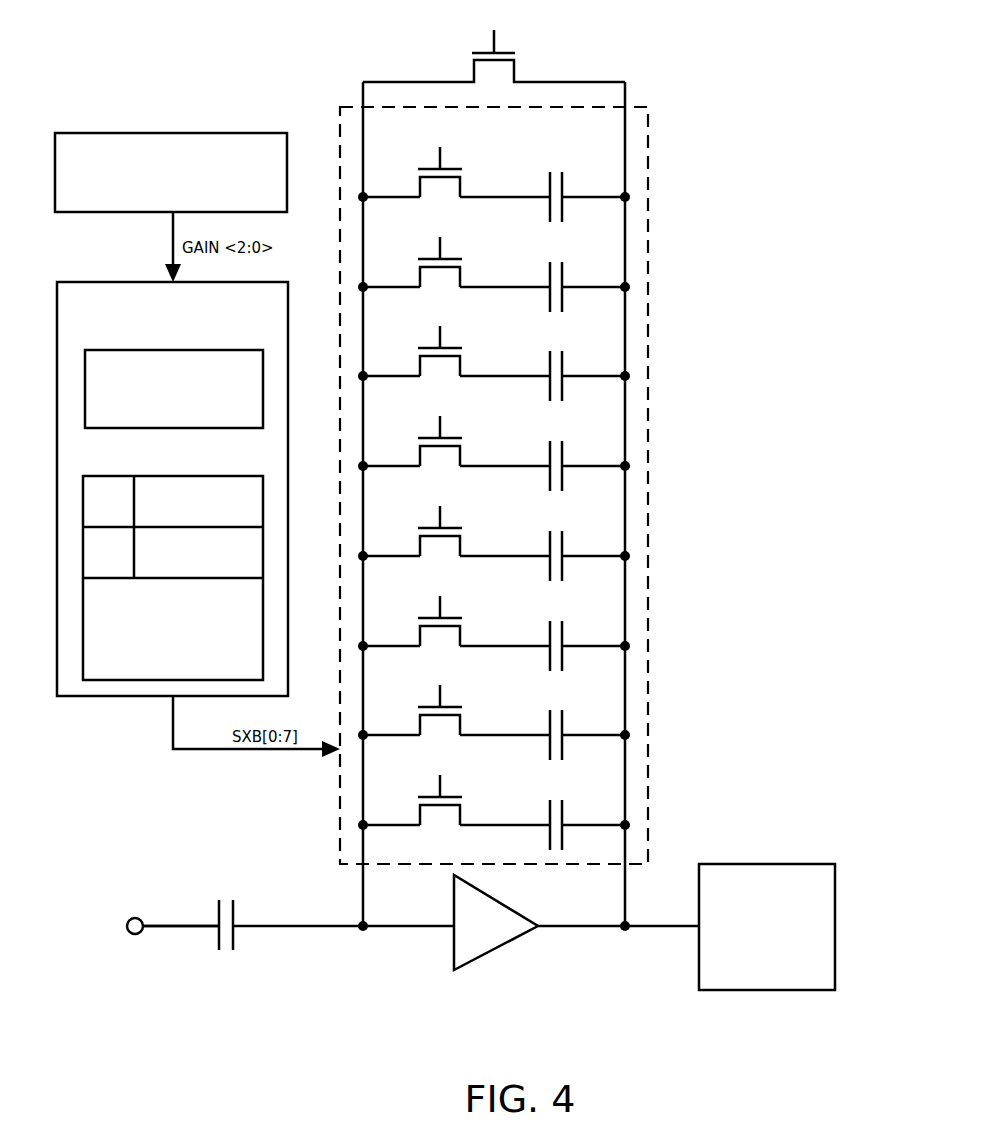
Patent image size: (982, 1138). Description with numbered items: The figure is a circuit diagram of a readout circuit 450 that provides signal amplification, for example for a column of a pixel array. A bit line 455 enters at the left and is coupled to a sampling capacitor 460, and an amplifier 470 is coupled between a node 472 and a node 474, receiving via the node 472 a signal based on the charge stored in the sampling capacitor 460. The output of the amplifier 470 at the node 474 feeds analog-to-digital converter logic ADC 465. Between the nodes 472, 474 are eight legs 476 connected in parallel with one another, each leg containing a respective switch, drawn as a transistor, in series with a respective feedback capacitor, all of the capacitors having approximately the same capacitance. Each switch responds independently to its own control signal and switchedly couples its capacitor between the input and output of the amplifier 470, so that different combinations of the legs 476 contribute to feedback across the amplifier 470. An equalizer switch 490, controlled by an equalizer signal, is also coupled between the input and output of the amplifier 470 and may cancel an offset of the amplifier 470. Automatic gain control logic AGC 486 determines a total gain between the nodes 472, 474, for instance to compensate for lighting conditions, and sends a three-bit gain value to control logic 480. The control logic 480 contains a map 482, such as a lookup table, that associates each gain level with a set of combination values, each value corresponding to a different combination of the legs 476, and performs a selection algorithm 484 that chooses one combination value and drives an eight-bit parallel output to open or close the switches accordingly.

The readout circuit 450 is at (183, 86).
The bit line 455 is at (171, 932).
The sampling capacitor 460 is at (232, 885).
The analog-to-digital converter logic ADC 465 is at (767, 927).
The amplifier 470 is at (500, 950).
The node 472 is at (361, 944).
The node 474 is at (621, 946).
The legs 476 is at (648, 383).
The control logic 480 is at (172, 489).
The map 482 is at (173, 566).
The selection algorithm 484 is at (174, 389).
The automatic gain control logic AGC 486 is at (171, 172).
The equalizer switch 490 is at (525, 57).